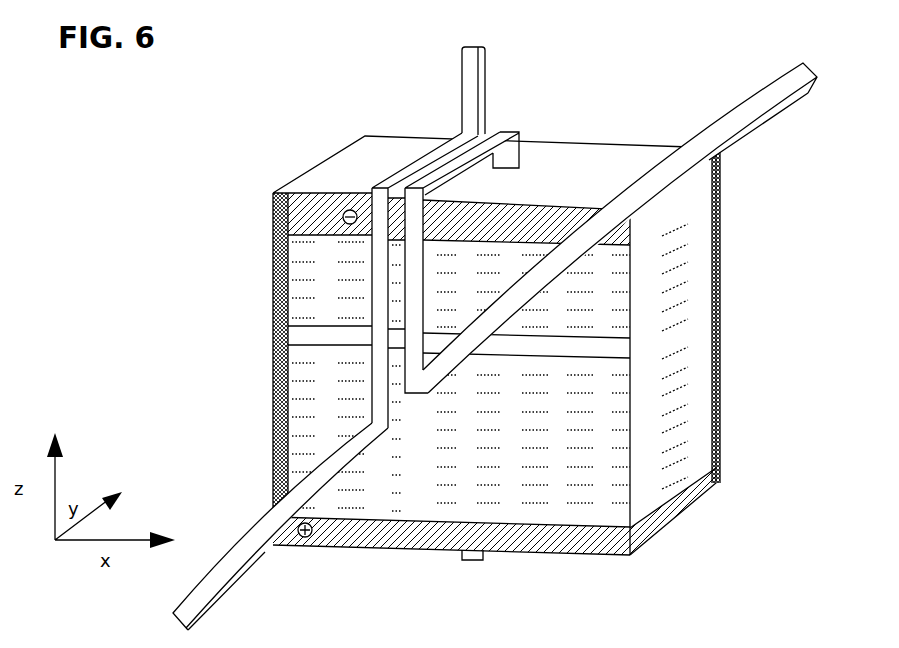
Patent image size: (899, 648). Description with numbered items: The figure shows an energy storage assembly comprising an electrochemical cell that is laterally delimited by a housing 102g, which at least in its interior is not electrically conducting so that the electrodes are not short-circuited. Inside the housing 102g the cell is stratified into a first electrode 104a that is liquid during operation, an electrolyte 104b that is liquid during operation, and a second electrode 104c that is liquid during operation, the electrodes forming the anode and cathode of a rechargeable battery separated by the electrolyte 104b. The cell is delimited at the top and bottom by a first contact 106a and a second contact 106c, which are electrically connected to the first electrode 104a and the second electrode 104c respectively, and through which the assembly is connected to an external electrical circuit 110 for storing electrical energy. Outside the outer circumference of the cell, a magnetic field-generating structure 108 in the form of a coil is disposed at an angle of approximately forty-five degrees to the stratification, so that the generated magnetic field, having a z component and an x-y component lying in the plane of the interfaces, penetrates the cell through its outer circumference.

The housing 102g is at (277, 412).
The first electrode 104a is at (300, 447).
The electrolyte 104b is at (300, 332).
The second electrode 104c is at (300, 281).
The first contact 106a is at (333, 537).
The second contact 106c is at (343, 218).
The magnetic field-generating structure 108 is at (760, 133).
The external electrical circuit 110 is at (487, 64).